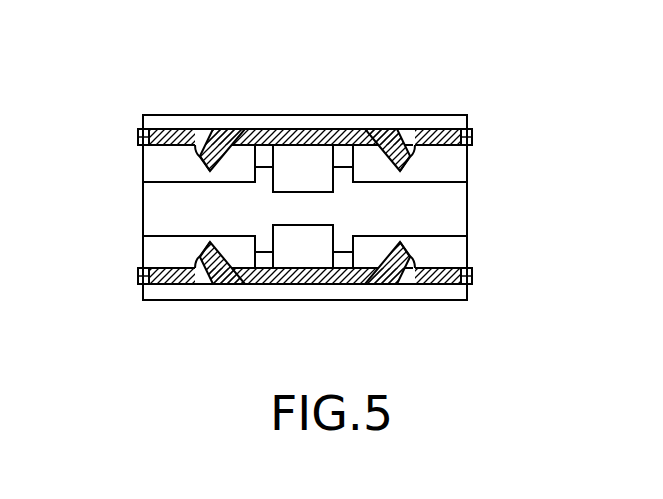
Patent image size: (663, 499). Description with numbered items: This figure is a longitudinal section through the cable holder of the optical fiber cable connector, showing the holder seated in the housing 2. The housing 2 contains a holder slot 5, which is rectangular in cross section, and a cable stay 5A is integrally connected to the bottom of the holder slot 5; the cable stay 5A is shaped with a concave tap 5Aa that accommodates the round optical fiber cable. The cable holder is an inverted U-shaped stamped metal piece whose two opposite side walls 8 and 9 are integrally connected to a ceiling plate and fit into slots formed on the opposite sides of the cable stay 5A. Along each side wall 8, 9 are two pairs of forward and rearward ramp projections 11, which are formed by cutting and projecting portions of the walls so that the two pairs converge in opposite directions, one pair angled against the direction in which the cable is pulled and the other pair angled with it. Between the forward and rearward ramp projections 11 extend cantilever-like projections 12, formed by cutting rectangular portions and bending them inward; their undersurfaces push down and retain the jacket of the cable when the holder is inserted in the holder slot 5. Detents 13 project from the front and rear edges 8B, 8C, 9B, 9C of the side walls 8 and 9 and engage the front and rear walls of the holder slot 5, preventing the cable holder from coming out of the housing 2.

The housing 2 is at (168, 118).
The holder slot 5 is at (462, 212).
The cable stay 5A is at (152, 207).
The concave tap 5Aa is at (163, 223).
The side wall 8 is at (307, 133).
The front edge of side wall 8B is at (138, 132).
The rear edge of side wall 8C is at (472, 134).
The side wall 9 is at (307, 286).
The front edge of side wall 9B is at (138, 282).
The rear edge of side wall 9C is at (472, 280).
The ramp projection 11 is at (397, 147).
The cantilever-like projection 12 is at (317, 165).
The detent 13 is at (472, 141).